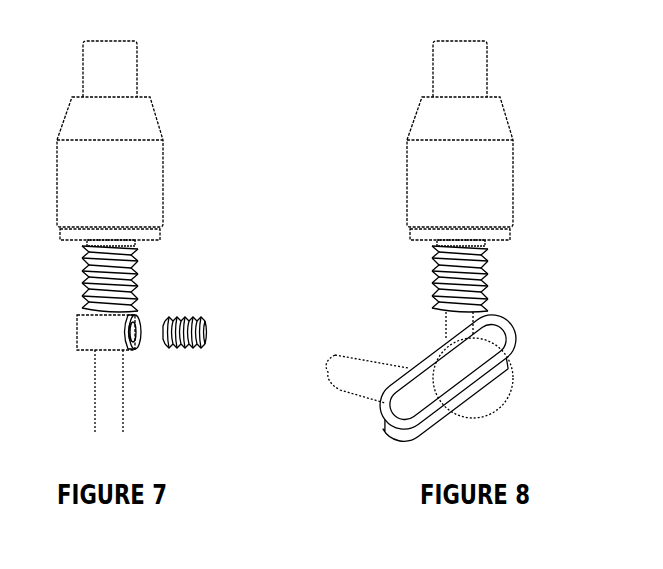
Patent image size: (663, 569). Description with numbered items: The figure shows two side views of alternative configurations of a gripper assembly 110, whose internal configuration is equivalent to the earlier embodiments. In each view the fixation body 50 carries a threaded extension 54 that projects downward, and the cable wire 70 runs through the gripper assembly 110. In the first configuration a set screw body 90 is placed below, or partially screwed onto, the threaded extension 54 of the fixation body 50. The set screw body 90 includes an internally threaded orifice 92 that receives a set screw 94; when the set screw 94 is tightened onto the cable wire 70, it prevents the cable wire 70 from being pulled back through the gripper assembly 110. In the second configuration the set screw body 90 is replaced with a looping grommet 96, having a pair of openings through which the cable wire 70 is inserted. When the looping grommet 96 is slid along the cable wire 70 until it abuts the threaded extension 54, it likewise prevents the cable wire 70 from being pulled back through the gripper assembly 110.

In FIG. 7, the gripper assembly 110 is at (172, 163).
In FIG. 8, the gripper assembly 110 is at (520, 155).
In FIG. 7, the fixation body 50 is at (160, 232).
In FIG. 8, the fixation body 50 is at (510, 233).
In FIG. 7, the threaded extension 54 is at (138, 280).
In FIG. 8, the threaded extension 54 is at (487, 278).
In FIG. 7, the set screw body 90 is at (140, 350).
In FIG. 7, the internally threaded orifice 92 is at (142, 318).
In FIG. 7, the set screw 94 is at (208, 330).
In FIG. 7, the cable wire 70 is at (123, 391).
In FIG. 8, the cable wire 70 is at (478, 390).
In FIG. 8, the looping grommet 96 is at (507, 330).